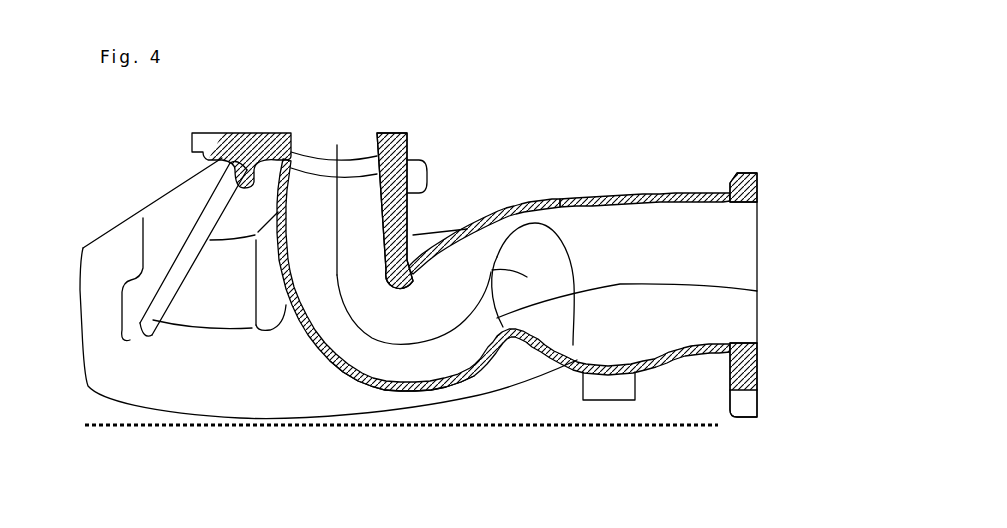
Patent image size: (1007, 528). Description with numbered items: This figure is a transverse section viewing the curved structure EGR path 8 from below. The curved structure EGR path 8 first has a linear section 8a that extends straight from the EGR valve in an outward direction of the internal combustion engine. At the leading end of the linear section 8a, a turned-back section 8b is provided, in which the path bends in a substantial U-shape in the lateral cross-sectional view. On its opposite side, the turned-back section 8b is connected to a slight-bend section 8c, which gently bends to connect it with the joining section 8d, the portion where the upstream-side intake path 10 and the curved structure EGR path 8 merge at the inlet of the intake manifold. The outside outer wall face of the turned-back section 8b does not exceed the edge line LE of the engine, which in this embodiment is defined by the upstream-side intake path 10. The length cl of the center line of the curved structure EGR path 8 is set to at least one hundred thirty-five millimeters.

The curved structure EGR path 8 is at (517, 309).
The linear section 8a is at (267, 233).
The turned-back section 8b is at (418, 385).
The slight-bend section 8c is at (490, 213).
The joining section 8d is at (617, 193).
The upstream-side intake path 10 is at (240, 395).
The length of a center line cl is at (337, 190).
The edge line LE is at (382, 430).